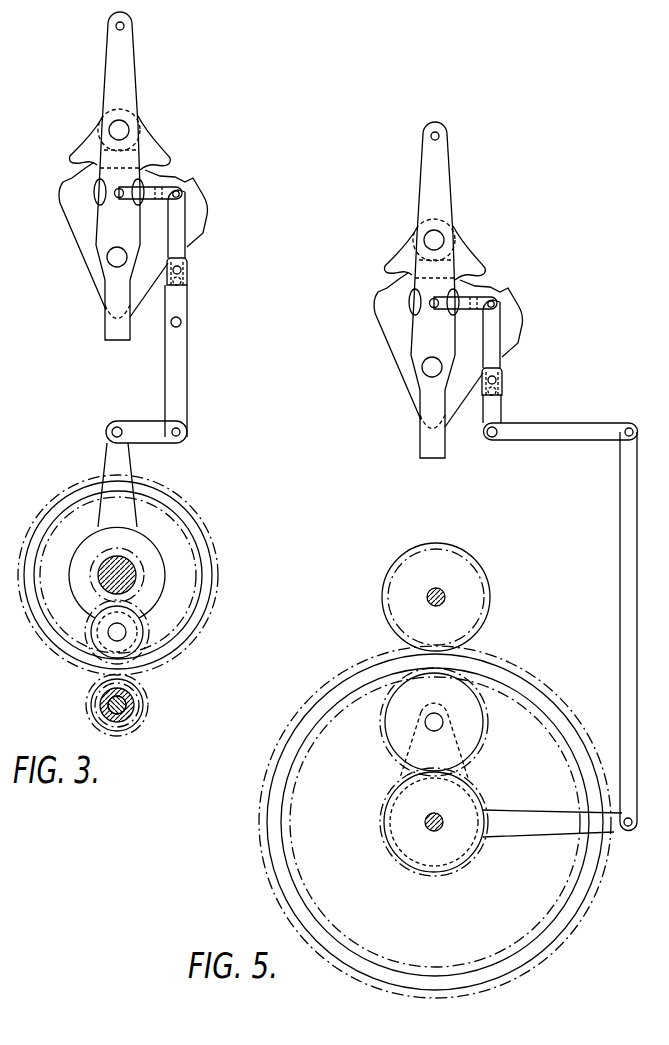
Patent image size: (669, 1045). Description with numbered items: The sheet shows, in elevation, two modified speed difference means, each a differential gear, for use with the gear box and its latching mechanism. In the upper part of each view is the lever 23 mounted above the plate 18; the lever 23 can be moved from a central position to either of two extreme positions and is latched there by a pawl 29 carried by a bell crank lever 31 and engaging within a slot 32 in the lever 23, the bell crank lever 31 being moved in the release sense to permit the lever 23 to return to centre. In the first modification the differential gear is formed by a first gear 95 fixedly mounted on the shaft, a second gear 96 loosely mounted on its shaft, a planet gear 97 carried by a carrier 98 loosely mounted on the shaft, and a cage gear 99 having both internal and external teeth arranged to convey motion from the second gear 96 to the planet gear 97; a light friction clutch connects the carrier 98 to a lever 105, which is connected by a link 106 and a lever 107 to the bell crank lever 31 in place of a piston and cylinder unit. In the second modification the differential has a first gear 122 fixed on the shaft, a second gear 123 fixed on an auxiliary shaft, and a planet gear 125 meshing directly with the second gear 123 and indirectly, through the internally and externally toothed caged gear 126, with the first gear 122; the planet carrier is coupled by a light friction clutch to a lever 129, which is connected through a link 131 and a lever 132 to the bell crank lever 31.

In FIG. 3, the plate 18 is at (83, 232).
In FIG. 5, the plate 18 is at (397, 345).
In FIG. 3, the lever 23 is at (123, 68).
In FIG. 5, the lever 23 is at (440, 168).
In FIG. 3, the pawl 29 is at (119, 195).
In FIG. 5, the pawl 29 is at (432, 303).
In FIG. 3, the bell crank lever 31 is at (178, 227).
In FIG. 5, the bell crank lever 31 is at (495, 342).
In FIG. 3, the slot 32 is at (115, 192).
In FIG. 5, the slot 32 is at (430, 310).
In FIG. 3, the first gear 95 is at (142, 563).
In FIG. 3, the second gear 96 is at (148, 705).
In FIG. 3, the planet gear 97 is at (133, 633).
In FIG. 3, the carrier 98 is at (148, 622).
In FIG. 3, the cage gear 99 is at (190, 512).
In FIG. 3, the lever 105 is at (122, 454).
In FIG. 3, the link 106 is at (139, 424).
In FIG. 3, the lever 107 is at (180, 372).
In FIG. 5, the first gear 122 is at (470, 578).
In FIG. 5, the second gear 123 is at (410, 865).
In FIG. 5, the planet gear 125 is at (470, 730).
In FIG. 5, the caged gear 126 is at (412, 822).
In FIG. 5, the lever 129 is at (517, 826).
In FIG. 5, the link 131 is at (625, 533).
In FIG. 5, the lever 132 is at (556, 431).